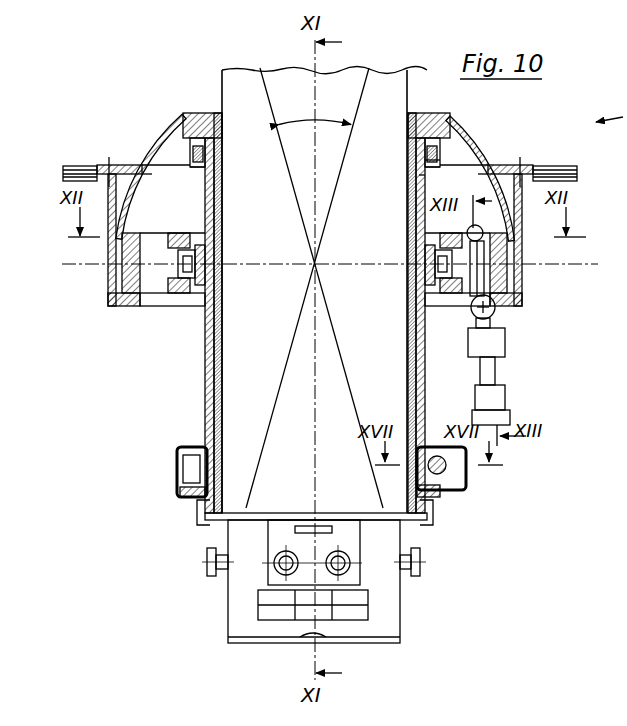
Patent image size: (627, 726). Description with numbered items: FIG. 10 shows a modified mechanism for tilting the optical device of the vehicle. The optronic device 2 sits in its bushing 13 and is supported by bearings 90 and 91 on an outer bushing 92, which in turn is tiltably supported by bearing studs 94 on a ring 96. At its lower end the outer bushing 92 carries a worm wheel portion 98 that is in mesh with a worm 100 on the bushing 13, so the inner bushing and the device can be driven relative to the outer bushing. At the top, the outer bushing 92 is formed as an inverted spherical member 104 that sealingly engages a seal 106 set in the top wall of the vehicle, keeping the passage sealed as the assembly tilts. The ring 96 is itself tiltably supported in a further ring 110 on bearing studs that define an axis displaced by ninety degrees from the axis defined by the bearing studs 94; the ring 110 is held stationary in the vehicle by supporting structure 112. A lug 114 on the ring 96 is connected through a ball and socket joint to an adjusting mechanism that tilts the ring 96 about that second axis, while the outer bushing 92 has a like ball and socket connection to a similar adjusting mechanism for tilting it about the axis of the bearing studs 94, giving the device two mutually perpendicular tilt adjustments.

The optronic device 2 is at (232, 88).
The bushing 13 is at (411, 116).
The bearing 90 is at (421, 176).
The bearing 91 is at (432, 156).
The outer bushing 92 is at (413, 210).
The bearing studs 94 is at (205, 260).
The ring 96 is at (177, 290).
The worm wheel portion 98 is at (180, 462).
The worm 100 is at (455, 478).
The inverted spherical member 104 is at (153, 143).
The seal 106 is at (133, 162).
The ring 110 is at (125, 270).
The supporting structure 112 is at (108, 312).
The lug 114 is at (483, 228).